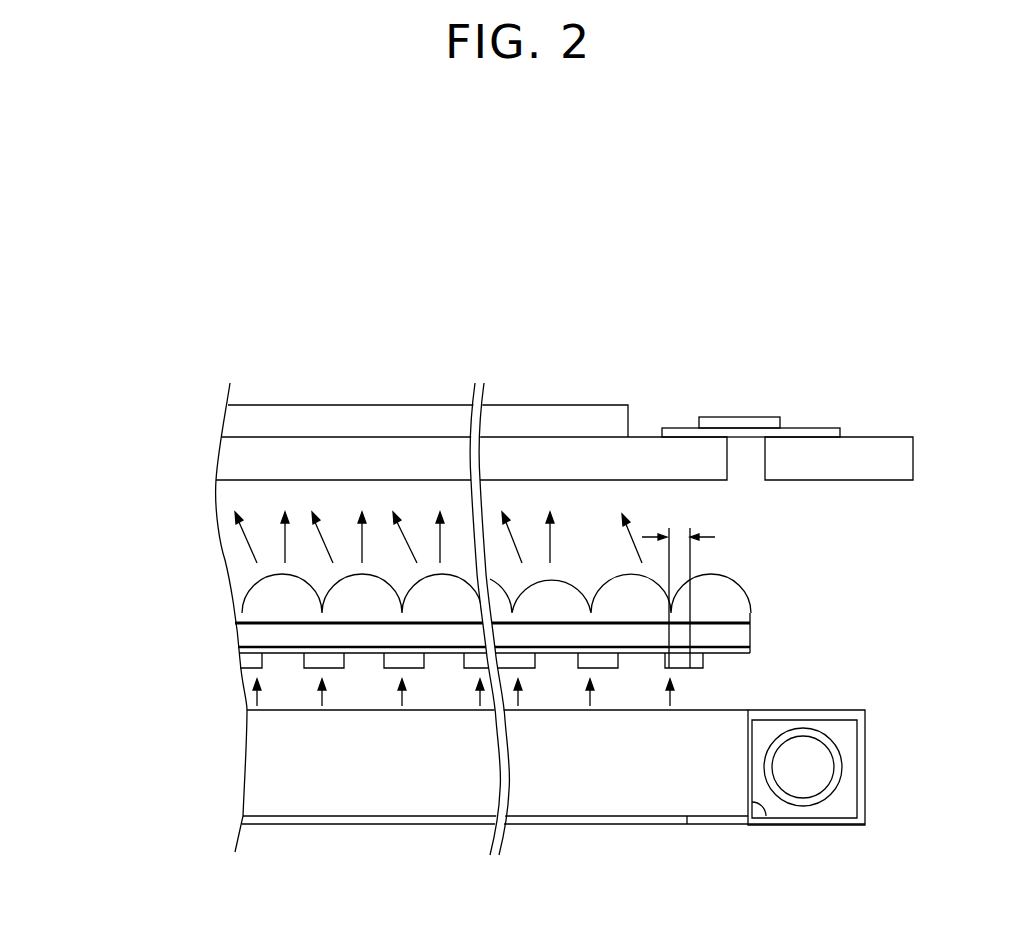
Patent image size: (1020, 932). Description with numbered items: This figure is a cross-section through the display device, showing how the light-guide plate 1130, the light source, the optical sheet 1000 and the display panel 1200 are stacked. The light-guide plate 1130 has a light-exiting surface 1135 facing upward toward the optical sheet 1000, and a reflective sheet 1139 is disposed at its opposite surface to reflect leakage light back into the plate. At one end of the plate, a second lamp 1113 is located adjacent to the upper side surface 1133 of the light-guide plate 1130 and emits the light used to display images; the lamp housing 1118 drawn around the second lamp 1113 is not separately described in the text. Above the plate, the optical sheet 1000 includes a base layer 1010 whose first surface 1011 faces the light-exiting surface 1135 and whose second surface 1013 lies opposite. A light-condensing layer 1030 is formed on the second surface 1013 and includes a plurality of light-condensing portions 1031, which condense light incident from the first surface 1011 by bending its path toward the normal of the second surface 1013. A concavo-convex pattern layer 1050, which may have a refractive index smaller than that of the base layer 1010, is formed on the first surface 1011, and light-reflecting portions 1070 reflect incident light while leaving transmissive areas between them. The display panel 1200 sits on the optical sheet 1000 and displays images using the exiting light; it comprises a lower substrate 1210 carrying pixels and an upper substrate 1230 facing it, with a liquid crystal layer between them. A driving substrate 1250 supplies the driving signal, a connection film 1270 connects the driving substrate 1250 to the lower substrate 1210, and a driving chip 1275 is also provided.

The display panel 1200 is at (116, 400).
The upper substrate 1230 is at (228, 411).
The lower substrate 1210 is at (232, 466).
The driving substrate 1250 is at (884, 448).
The connection film 1270 is at (813, 432).
The driving chip 1275 is at (738, 420).
The optical sheet 1000 is at (770, 629).
The light-condensing portions 1031 is at (263, 574).
The light-condensing layer 1030 is at (258, 613).
The base layer 1010 is at (116, 618).
The second surface 1013 is at (262, 633).
The first surface 1011 is at (262, 648).
The concavo-convex pattern layer 1050 is at (262, 656).
The light-reflecting portions 1070 is at (262, 664).
The light-guide plate 1130 is at (262, 776).
The light-exiting surface 1135 is at (268, 711).
The reflective sheet 1139 is at (318, 824).
The lamp housing 1118 is at (848, 825).
The second lamp 1113 is at (802, 802).
The upper side surface 1133 is at (760, 806).